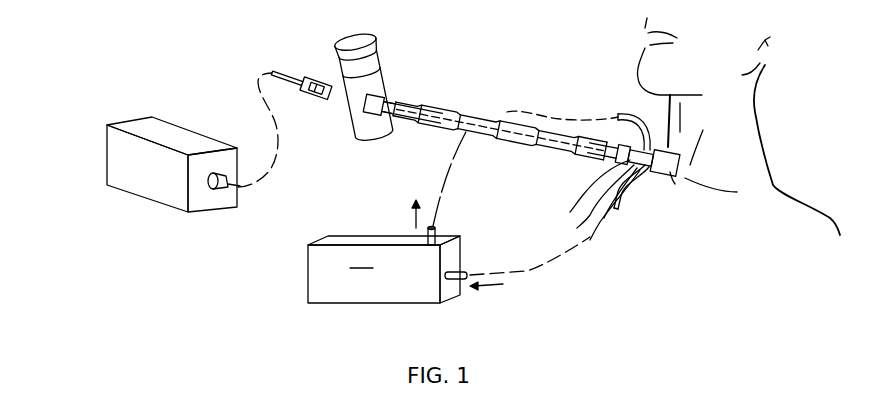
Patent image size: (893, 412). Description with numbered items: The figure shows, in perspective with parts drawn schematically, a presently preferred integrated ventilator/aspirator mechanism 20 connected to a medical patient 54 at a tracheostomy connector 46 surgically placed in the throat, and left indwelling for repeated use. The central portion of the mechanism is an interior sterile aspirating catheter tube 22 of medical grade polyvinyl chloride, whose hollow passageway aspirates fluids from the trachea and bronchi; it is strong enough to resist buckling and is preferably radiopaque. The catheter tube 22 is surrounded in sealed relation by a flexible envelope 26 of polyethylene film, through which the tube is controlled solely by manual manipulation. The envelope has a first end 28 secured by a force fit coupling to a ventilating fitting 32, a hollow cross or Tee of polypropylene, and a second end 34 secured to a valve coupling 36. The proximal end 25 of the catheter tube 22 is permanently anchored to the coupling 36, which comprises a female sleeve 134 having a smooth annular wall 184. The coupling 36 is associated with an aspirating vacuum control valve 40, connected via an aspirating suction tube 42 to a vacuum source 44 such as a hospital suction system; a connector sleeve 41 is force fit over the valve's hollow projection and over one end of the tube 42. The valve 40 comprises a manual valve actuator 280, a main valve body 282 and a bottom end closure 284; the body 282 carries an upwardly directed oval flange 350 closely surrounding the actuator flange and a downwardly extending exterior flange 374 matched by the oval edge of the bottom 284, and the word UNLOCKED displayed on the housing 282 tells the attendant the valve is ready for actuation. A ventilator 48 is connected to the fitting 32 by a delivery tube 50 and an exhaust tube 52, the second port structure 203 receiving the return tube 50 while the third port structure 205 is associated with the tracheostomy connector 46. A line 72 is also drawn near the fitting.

The integrated ventilator/aspirator mechanism 20 is at (463, 96).
The aspirating catheter tube 22 is at (483, 113).
The proximal end of catheter tube 25 is at (422, 103).
The flexible envelope 26 is at (527, 140).
The first end of envelope 28 is at (584, 173).
The ventilating fitting 32 is at (652, 174).
The second end of envelope 34 is at (395, 114).
The valve coupling 36 is at (381, 88).
The aspirating vacuum control valve 40 is at (333, 33).
The connector sleeve 41 is at (307, 71).
The aspirating suction tube 42 is at (212, 192).
The vacuum source 44 is at (160, 130).
The tracheostomy connector 46 is at (670, 176).
The ventilator 48 is at (384, 251).
The delivery tube 50 is at (466, 272).
The exhaust tube 52 is at (623, 115).
The patient 54 is at (714, 78).
The irrigation line 72 is at (583, 190).
The female sleeve 134 is at (396, 100).
The annular wall 184 is at (368, 120).
The second ventilating port structure 203 is at (586, 207).
The third ventilating port structure 205 is at (637, 130).
The valve actuator 280 is at (366, 51).
The main valve body 282 is at (316, 120).
The bottom end closure 284 is at (328, 144).
The upwardly directed oval flange 350 is at (366, 110).
The downwardly extending exterior flange 374 is at (350, 138).